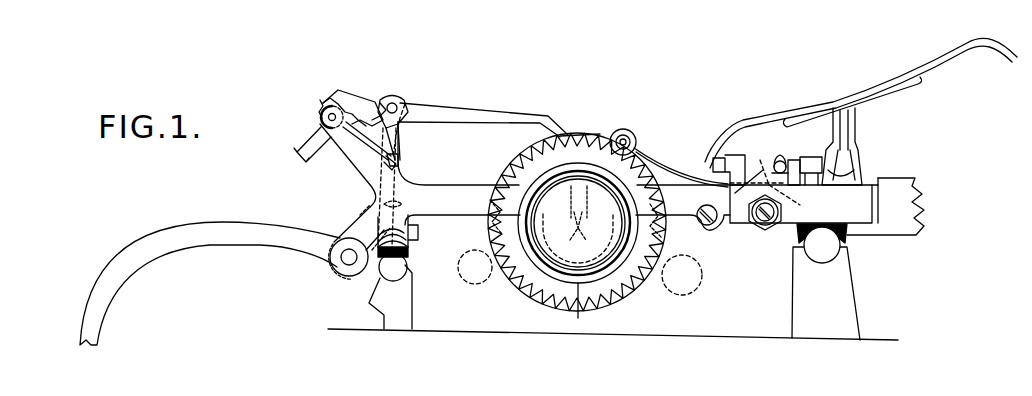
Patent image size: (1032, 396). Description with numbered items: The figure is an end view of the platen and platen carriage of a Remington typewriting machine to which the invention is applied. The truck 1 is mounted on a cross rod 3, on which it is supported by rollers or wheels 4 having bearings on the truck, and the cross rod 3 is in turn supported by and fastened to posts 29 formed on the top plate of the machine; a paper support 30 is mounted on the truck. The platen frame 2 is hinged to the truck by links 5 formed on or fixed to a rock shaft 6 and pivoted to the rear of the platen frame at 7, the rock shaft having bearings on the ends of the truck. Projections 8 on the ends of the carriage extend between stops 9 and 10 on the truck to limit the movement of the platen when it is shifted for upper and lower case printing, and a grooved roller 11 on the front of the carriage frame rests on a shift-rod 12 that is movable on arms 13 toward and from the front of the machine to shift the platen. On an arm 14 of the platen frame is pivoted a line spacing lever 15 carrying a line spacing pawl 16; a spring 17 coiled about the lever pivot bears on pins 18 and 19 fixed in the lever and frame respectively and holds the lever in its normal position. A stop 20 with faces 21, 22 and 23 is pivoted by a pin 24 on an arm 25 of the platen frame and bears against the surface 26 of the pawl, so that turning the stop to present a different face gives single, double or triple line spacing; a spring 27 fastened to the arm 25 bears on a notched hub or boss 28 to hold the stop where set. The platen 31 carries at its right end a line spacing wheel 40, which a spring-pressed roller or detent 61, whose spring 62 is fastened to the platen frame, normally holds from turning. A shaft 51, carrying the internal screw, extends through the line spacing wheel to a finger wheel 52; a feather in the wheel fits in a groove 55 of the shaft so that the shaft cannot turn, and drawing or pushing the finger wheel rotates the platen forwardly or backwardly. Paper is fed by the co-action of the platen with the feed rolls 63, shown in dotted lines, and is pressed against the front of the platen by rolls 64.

The truck 1 is at (827, 202).
The platen frame 2 is at (468, 188).
The cross rod 3 is at (822, 263).
The rollers or wheels 4 is at (856, 160).
The links 5 is at (760, 160).
The rock shaft 6 is at (763, 226).
The pivot 7 is at (786, 160).
The projections 8 is at (778, 161).
The stop 9 is at (722, 158).
The stop 10 is at (810, 158).
The grooved roller 11 is at (408, 232).
The shift-rod 12 is at (406, 264).
The arms 13 is at (412, 293).
The arm 14 is at (355, 224).
The line spacing lever 15 is at (241, 223).
The line spacing pawl 16 is at (448, 111).
The spring 17 is at (379, 277).
The pin 18 is at (378, 189).
The pin 19 is at (401, 205).
The stop 20 is at (346, 90).
The face 21 is at (394, 100).
The face 22 is at (378, 102).
The face 23 is at (330, 104).
The pin 24 is at (327, 118).
The arm 25 is at (348, 165).
The surface 26 is at (403, 112).
The spring 27 is at (352, 140).
The notched hub or boss 28 is at (322, 102).
The posts 29 is at (850, 290).
The paper support 30 is at (864, 97).
The platen 31 is at (586, 136).
The line spacing wheel 40 is at (538, 298).
The shaft 51 is at (578, 223).
The finger wheel 52 is at (588, 307).
The groove 55 is at (578, 224).
The spring-pressed roller or detent 61 is at (635, 140).
The spring 62 is at (702, 172).
The feed rolls 63 is at (672, 296).
The rolls 64 is at (483, 280).